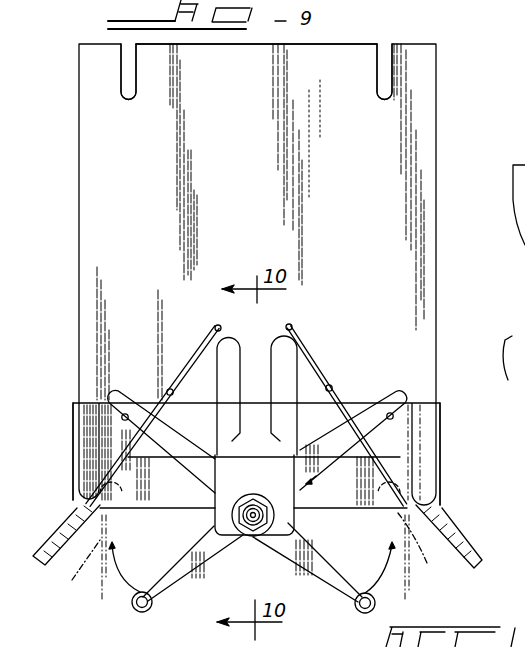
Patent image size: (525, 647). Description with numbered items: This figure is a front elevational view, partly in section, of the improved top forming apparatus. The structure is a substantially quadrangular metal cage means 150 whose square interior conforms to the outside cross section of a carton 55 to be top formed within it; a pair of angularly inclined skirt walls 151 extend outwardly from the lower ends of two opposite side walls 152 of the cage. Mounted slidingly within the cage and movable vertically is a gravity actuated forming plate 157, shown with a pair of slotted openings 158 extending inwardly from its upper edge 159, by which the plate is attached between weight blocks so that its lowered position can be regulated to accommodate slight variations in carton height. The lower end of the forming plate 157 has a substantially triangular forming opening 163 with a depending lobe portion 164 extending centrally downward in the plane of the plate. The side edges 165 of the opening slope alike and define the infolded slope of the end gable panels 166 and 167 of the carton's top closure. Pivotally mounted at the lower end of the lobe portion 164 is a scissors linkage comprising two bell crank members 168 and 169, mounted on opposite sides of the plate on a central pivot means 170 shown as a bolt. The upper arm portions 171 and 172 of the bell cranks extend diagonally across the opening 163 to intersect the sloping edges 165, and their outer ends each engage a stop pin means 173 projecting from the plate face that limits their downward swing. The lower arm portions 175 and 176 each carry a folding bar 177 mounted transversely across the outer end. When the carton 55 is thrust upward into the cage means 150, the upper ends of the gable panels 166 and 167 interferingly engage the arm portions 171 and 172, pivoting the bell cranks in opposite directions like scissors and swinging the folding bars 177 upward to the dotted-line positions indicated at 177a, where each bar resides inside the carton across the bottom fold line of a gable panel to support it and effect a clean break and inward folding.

The carton 55 is at (408, 588).
The cage means 150 is at (441, 474).
The skirt walls 151 is at (47, 548).
The side walls 152 is at (78, 437).
The forming plate 157 is at (437, 211).
The slotted openings 158 is at (137, 83).
The upper edge 159 is at (340, 44).
The forming opening 163 is at (297, 367).
The depending lobe portion 164 is at (273, 439).
The side edges 165 is at (172, 389).
The end gable panel 166 is at (217, 326).
The end gable panel 167 is at (292, 330).
The bell crank member 168 is at (306, 484).
The bell crank member 169 is at (197, 494).
The central pivot means 170 is at (262, 517).
The upper arm portion 171 is at (398, 400).
The upper arm portion 172 is at (160, 434).
The stop pin means 173 is at (393, 418).
The lower arm portion 175 is at (330, 580).
The lower arm portion 176 is at (180, 573).
The folding bar 177 is at (141, 612).
The raised position of folding bar 177a is at (247, 553).